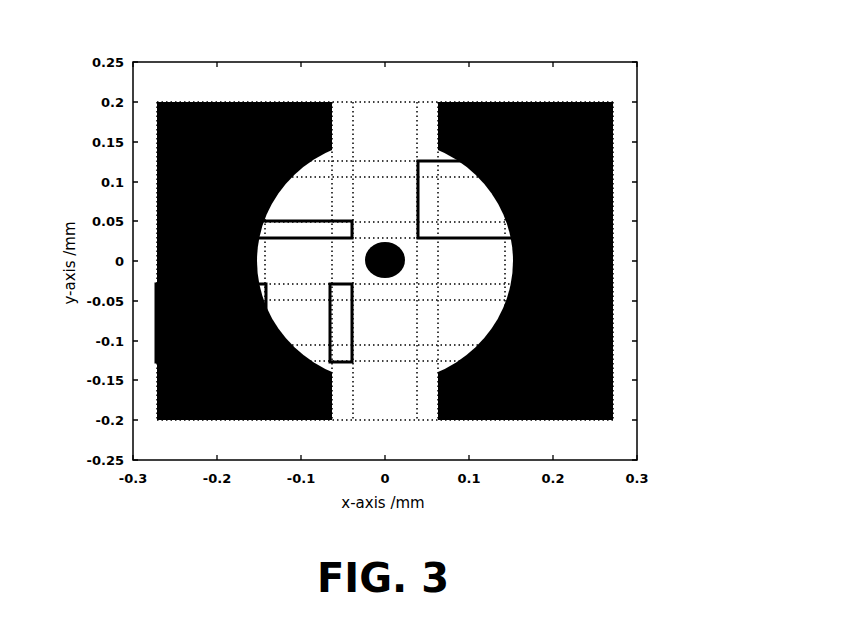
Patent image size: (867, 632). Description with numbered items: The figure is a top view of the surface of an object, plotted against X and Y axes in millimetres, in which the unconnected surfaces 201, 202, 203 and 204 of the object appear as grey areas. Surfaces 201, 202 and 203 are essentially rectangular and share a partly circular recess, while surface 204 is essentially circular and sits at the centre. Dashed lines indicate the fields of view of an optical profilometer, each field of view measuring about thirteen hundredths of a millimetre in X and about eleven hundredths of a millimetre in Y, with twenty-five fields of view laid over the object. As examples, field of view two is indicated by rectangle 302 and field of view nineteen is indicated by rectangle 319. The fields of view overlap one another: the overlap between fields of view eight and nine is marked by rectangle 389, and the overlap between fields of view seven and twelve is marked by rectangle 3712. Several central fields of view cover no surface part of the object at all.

The surface 201 is at (220, 88).
The surface 202 is at (525, 90).
The surface 203 is at (452, 211).
The surface 204 is at (374, 226).
The rectangle indicating field of overlap 389 is at (243, 226).
The rectangle indicating field of view 319 is at (528, 190).
The rectangle indicating field of overlap 3712 is at (352, 326).
The rectangle indicating field of view 302 is at (156, 318).